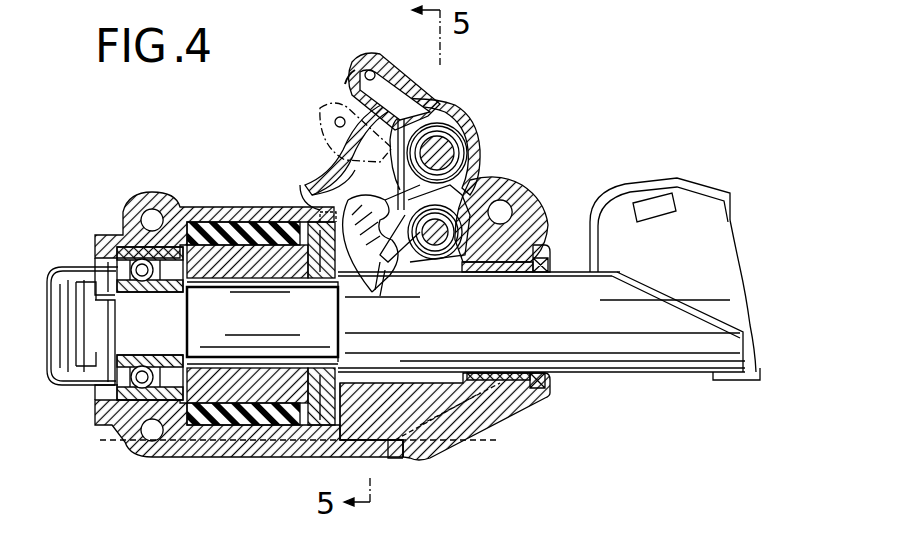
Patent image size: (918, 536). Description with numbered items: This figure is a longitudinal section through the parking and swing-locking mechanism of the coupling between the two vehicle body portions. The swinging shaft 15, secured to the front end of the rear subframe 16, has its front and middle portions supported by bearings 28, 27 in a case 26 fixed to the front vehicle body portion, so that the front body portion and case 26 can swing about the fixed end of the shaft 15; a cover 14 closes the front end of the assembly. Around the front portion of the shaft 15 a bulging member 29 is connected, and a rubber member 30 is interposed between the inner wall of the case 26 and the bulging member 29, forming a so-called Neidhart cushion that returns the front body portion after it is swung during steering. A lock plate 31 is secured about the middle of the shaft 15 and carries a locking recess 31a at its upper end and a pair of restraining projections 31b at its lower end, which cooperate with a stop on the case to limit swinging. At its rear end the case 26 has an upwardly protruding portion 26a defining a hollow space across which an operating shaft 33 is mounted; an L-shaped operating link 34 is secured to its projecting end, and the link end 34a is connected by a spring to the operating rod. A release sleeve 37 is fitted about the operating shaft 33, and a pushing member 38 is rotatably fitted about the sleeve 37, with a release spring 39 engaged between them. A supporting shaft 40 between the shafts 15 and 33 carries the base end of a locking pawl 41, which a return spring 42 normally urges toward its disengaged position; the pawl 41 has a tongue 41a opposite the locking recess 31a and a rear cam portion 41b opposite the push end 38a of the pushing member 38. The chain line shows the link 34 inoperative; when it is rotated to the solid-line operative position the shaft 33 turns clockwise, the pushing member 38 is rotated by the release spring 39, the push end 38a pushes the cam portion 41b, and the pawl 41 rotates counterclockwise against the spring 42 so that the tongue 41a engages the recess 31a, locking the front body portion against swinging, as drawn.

The cover 14 is at (76, 400).
The swinging shaft 15 is at (650, 365).
The rear subframe 16 is at (698, 190).
The case 26 is at (240, 445).
The upwardly protruding portion 26a is at (455, 108).
The bearing 27 is at (522, 258).
The bearing 28 is at (132, 428).
The bulging member 29 is at (170, 428).
The rubber member 30 is at (203, 425).
The lock plate 31 is at (300, 402).
The locking recess 31a is at (320, 210).
The restraining projections 31b is at (385, 442).
The operating shaft 33 is at (448, 155).
The L-shaped operating link 34 is at (374, 122).
The end of operating link 34a is at (354, 68).
The release sleeve 37 is at (400, 140).
The pushing member 38 is at (462, 153).
The push end 38a is at (336, 147).
The release spring 39 is at (462, 130).
The supporting shaft 40 is at (474, 206).
The locking pawl 41 is at (342, 245).
The tongue 41a is at (338, 186).
The cam portion 41b is at (386, 252).
The return spring 42 is at (412, 262).